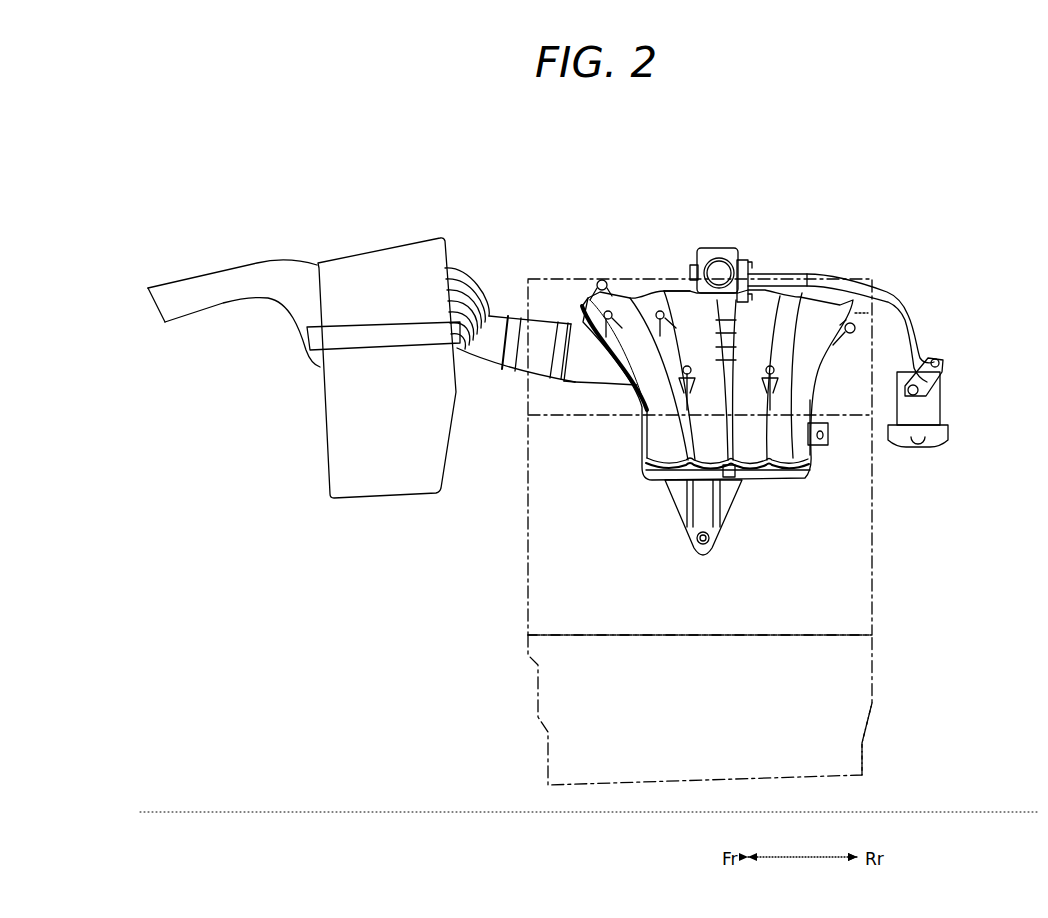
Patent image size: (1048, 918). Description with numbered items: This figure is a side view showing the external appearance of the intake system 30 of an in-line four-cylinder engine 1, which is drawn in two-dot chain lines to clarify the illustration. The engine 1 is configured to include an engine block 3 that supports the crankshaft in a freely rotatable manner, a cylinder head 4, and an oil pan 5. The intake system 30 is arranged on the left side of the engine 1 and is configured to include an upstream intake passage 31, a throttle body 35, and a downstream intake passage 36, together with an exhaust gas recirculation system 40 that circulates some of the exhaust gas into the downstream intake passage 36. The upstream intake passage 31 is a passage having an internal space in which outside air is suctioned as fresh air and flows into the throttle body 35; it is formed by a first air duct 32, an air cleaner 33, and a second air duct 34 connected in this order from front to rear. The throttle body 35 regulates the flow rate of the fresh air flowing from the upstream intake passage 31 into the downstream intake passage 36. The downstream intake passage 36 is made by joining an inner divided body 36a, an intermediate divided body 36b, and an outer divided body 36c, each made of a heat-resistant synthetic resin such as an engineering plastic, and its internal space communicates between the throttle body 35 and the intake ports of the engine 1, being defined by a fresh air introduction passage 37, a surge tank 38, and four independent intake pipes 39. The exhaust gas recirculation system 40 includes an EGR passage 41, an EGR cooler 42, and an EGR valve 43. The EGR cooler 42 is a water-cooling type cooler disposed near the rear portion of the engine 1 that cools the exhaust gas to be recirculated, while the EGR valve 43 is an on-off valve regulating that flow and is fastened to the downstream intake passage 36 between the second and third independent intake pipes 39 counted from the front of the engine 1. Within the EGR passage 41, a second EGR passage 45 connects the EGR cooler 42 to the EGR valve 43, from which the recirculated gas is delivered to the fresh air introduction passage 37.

The engine 1 is at (537, 690).
The engine block 3 is at (873, 580).
The cylinder head 4 is at (553, 277).
The oil pan 5 is at (873, 687).
The intake system 30 is at (618, 247).
The upstream intake passage 31 is at (318, 338).
The first air duct 32 is at (202, 283).
The air cleaner 33 is at (323, 448).
The second air duct 34 is at (479, 263).
The throttle body 35 is at (537, 368).
The downstream intake passage 36 is at (728, 393).
The inner divided body 36a is at (582, 318).
The intermediate divided body 36b is at (612, 385).
The outer divided body 36c is at (671, 291).
The fresh air introduction passage 37 is at (583, 383).
The surge tank 38 is at (773, 483).
The independent intake pipes 39 is at (708, 440).
The exhaust gas recirculation system 40 is at (865, 314).
The EGR passage 41 is at (901, 289).
The EGR cooler 42 is at (944, 400).
The EGR valve 43 is at (721, 246).
The second EGR passage 45 is at (828, 285).